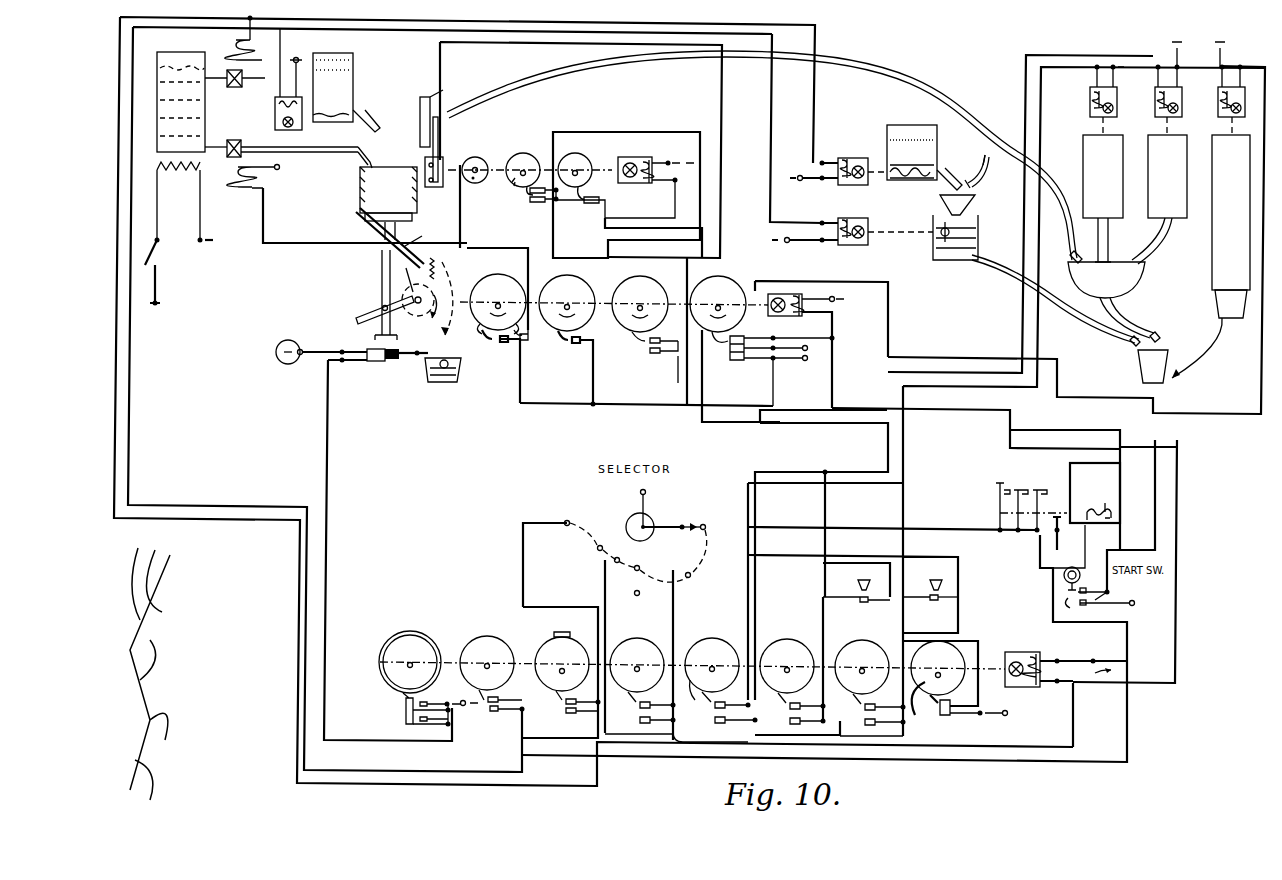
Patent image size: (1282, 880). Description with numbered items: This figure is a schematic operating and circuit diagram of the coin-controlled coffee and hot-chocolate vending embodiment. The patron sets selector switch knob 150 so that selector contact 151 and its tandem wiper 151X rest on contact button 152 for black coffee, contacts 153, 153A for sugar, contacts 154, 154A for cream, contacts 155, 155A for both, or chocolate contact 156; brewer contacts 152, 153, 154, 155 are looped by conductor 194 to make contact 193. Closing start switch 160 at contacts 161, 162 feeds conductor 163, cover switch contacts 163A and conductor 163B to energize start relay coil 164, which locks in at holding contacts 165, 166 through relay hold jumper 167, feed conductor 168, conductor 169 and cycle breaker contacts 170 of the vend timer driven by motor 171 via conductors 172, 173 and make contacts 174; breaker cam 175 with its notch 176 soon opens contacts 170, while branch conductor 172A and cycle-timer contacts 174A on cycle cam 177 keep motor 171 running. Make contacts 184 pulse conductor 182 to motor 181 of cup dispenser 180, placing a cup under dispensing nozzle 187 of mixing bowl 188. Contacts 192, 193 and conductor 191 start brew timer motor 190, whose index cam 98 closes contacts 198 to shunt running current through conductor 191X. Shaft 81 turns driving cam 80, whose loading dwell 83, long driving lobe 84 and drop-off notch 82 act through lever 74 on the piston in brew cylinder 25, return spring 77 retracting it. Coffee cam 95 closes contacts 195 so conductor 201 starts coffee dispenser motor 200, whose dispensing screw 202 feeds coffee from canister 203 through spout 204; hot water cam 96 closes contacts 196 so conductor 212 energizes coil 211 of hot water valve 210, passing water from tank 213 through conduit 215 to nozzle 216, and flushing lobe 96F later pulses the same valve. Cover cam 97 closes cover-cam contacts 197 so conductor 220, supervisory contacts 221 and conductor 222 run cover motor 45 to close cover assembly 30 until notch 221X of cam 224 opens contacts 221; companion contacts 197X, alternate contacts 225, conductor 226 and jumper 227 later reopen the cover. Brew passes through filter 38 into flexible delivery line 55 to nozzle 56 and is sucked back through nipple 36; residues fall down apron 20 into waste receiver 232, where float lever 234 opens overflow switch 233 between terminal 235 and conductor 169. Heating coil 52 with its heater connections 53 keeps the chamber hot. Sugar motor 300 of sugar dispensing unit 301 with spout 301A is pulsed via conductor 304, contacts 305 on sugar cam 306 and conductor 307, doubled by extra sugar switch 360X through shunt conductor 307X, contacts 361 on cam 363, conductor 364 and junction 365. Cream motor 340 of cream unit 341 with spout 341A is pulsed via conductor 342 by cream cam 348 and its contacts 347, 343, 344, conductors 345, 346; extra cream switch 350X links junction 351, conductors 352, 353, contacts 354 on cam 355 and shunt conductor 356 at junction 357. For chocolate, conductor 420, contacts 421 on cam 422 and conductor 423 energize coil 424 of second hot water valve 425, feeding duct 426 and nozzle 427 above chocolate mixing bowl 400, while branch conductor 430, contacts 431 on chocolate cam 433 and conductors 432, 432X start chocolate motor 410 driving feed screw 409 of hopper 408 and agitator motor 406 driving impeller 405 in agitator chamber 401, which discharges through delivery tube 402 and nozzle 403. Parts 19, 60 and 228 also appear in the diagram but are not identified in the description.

The cycle motor switch 19 is at (726, 353).
The brewer lever 20 is at (370, 222).
The brewer 25 is at (417, 206).
The coffee chute 30 is at (435, 95).
The chute bracket 36 is at (440, 118).
The chute plate 38 is at (420, 105).
The relay 45 is at (627, 157).
The water heater 52 is at (178, 170).
The thermostat switch 53 is at (162, 226).
The coffee delivery tube 55 is at (640, 62).
The tube nozzle 56 is at (1068, 261).
The brewer bottom 60 is at (412, 218).
The lever 74 is at (356, 321).
The spring 77 is at (440, 264).
The stand 80 is at (395, 283).
The arc path 81 is at (458, 297).
The link 82 is at (407, 273).
The cam 83 is at (420, 318).
The cam arm 84 is at (437, 325).
The coffee motor 95 is at (560, 285).
The hot water motor 96 is at (492, 278).
The hot water motor switch 96F is at (528, 342).
The cover motor 97 is at (630, 286).
The cycle motor 98 is at (725, 280).
The selector dial 150 is at (630, 519).
The selector arm 151 is at (695, 521).
The selector arm contact 151X is at (672, 523).
The black contact 152 is at (708, 528).
The sugar contact 153 is at (692, 578).
The contact 153A is at (685, 551).
The cream contact 154 is at (640, 598).
The contact 154A is at (656, 564).
The sugar and cream contact 155 is at (614, 563).
The contact 155A is at (618, 549).
The chocolate contact 156 is at (592, 523).
The start switch 160 is at (1105, 593).
The switch blade 161 is at (1081, 608).
The coin switch 162 is at (1072, 593).
The conductor 163 is at (722, 190).
The conductor 163A is at (606, 200).
The conductor 163B is at (618, 228).
The relay armature 164 is at (1108, 506).
The relay contact 165 is at (1057, 536).
The relay coil 166 is at (1082, 531).
The start relay 167 is at (1120, 467).
The conductor 168 is at (612, 757).
The conductor 169 is at (327, 483).
The conductor 170 is at (408, 723).
The relay 171 is at (1035, 701).
The conductor 172 is at (1068, 686).
The conductor 172A is at (1073, 720).
The conductor 173 is at (1177, 482).
The conductor 174 is at (1030, 434).
The conductor 174A is at (405, 701).
The relay break motor 175 is at (975, 641).
The conductor 176 is at (896, 712).
The cycle timer motor 177 is at (398, 633).
The cup dispenser 180 is at (1212, 269).
The cup dispenser relay 181 is at (1232, 61).
The conductor 182 is at (1265, 76).
The contact 184 is at (1018, 486).
The mix nozzle 187 is at (1160, 339).
The mixing bowl 188 is at (1128, 291).
The brew timer relay 190 is at (846, 300).
The conductor 191 is at (855, 408).
The conductor 191X is at (836, 329).
The contact 192 is at (1037, 489).
The contact 193 is at (1000, 501).
The conductor 194 is at (928, 519).
The switch 195 is at (575, 345).
The switch 196 is at (495, 340).
The switch 197 is at (650, 353).
The switch 197X is at (650, 341).
The terminals 198 is at (765, 337).
The water valve relay 200 is at (275, 112).
The conductor 201 is at (525, 43).
The coffee hopper bottom 202 is at (345, 118).
The coffee hopper 203 is at (353, 55).
The hopper spout 204 is at (379, 122).
The water valve 210 is at (241, 150).
The valve solenoid 211 is at (238, 182).
The conductor 212 is at (307, 243).
The water tank 213 is at (165, 52).
The water pipe 215 is at (320, 152).
The pipe outlet 216 is at (365, 150).
The conductor 220 is at (553, 224).
The switch 221 is at (532, 204).
The motor 1 221X is at (538, 155).
The switch 222 is at (583, 208).
The timer 224 is at (512, 155).
The switch 225 is at (530, 193).
The conductor 226 is at (580, 132).
The conductor 227 is at (687, 398).
The motor 2 228 is at (578, 152).
The waste tank 232 is at (463, 395).
The float switch 233 is at (360, 362).
The switch contact 234 is at (420, 360).
The power source 235 is at (278, 358).
The sugar relay 300 is at (1090, 99).
The sugar dispenser 301 is at (1123, 151).
The sugar chute 301A is at (1108, 259).
The conductor 304 is at (950, 386).
The switch 305 is at (730, 706).
The sugar motor 306 is at (730, 639).
The conductor 307 is at (845, 738).
The conductor 307X is at (931, 614).
The cream relay 340 is at (1182, 97).
The cream dispenser 341 is at (1190, 151).
The cream tube 341A is at (1143, 255).
The conductor 342 is at (962, 372).
The switch 343 is at (640, 706).
The conductor 344 is at (704, 719).
The conductor 345 is at (673, 613).
The conductor 346 is at (605, 616).
The switch 347 is at (640, 721).
The cream motor 348 is at (660, 637).
The coin contact 350X is at (870, 599).
The conductor 351 is at (826, 466).
The conductor 352 is at (823, 576).
The conductor 353 is at (823, 616).
The switch 354 is at (797, 677).
The extra cream motor 355 is at (805, 638).
The switch 356 is at (868, 725).
The switch arm 357 is at (686, 687).
The coin contact 360X is at (942, 601).
The switch 361 is at (868, 677).
The extra sugar motor 363 is at (880, 639).
The conductor 364 is at (903, 504).
The conductor 365 is at (903, 481).
The funnel 400 is at (975, 201).
The whipper bowl 401 is at (978, 241).
The whipper outlet tube 402 is at (1092, 324).
The whipper nozzle 403 is at (1130, 347).
The whipper 405 is at (942, 227).
The whipper relay 406 is at (858, 219).
The chocolate hopper 408 is at (907, 125).
The auger 409 is at (893, 165).
The chocolate relay 410 is at (840, 185).
The conductor 420 is at (523, 556).
The switch 421 is at (484, 713).
The chocolate agitator motor 422 is at (466, 641).
The conductor 423 is at (130, 330).
The solenoid 424 is at (252, 45).
The water valve 425 is at (235, 86).
The water pipe 426 is at (992, 145).
The water nozzle 427 is at (975, 185).
The conductor 430 is at (560, 608).
The switch 431 is at (566, 709).
The conductor 432 is at (116, 356).
The conductor 432X is at (770, 90).
The chocolate vend motor 433 is at (585, 627).